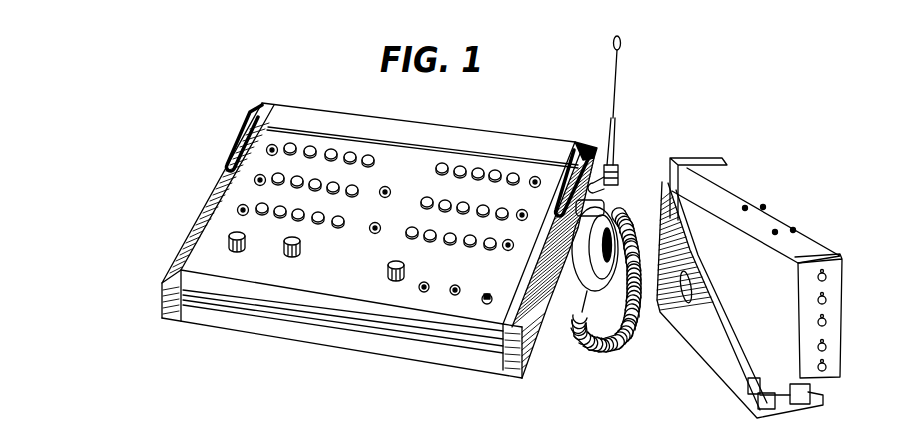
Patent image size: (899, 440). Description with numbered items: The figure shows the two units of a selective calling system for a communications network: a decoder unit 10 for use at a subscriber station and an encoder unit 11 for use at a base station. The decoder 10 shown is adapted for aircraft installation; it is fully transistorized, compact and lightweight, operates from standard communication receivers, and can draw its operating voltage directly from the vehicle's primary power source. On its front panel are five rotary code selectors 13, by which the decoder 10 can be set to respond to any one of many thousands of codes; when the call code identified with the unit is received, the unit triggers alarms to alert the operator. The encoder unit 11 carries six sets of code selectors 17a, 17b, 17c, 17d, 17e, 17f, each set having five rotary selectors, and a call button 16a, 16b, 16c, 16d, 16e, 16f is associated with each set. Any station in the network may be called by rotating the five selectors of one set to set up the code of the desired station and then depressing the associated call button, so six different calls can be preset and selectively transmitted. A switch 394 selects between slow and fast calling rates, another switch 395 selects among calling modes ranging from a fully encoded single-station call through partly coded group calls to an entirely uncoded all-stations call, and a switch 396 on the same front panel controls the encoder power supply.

The decoder unit 10 is at (803, 217).
The encoder unit 11 is at (283, 346).
The rotary code selectors 13 is at (847, 272).
The call button 16a is at (273, 146).
The call button 16b is at (260, 175).
The call button 16c is at (246, 201).
The call button 16d is at (536, 177).
The call button 16e is at (528, 209).
The call button 16f is at (510, 240).
The set of code selectors 17a is at (375, 160).
The set of code selectors 17b is at (366, 189).
The set of code selectors 17c is at (347, 226).
The set of code selectors 17d is at (437, 169).
The set of code selectors 17e is at (421, 203).
The set of code selectors 17f is at (406, 232).
The switch 394 is at (246, 239).
The switch 395 is at (299, 245).
The switch 396 is at (402, 266).